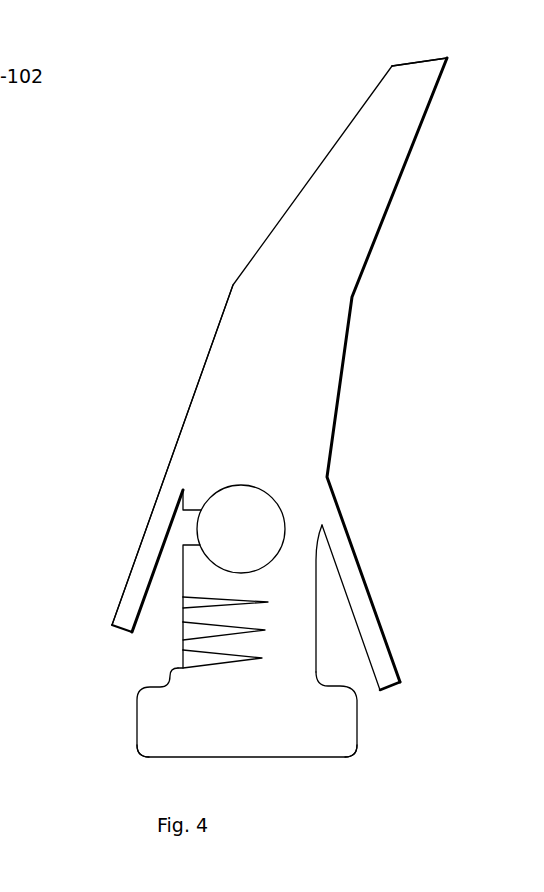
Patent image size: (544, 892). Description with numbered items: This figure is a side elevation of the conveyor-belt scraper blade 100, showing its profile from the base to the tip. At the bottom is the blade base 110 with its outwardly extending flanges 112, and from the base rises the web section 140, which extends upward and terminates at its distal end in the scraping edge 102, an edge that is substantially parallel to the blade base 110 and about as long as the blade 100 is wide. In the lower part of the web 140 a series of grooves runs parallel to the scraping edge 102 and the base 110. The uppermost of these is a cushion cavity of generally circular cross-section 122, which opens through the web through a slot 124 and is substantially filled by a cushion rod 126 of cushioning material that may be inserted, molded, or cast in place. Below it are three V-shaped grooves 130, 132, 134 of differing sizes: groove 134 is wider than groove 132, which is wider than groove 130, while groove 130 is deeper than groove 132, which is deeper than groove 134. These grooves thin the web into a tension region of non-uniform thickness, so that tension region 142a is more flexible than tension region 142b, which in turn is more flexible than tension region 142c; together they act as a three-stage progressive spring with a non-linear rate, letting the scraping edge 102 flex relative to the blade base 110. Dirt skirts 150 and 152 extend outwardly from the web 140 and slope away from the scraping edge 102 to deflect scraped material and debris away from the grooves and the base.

The blade 100 is at (275, 232).
The scraping edge 102 is at (447, 59).
The blade base 110 is at (232, 758).
The outwardly extending flanges 112 is at (137, 733).
The circular cross-section 122 is at (236, 484).
The slot 124 is at (187, 528).
The cushion rod 126 is at (262, 540).
The groove 130 is at (181, 601).
The groove 132 is at (182, 633).
The groove 134 is at (192, 660).
The web section 140 is at (213, 375).
The tension region 142a is at (277, 602).
The tension region 142b is at (277, 630).
The tension region 142c is at (277, 658).
The dirt skirt 150 is at (352, 542).
The dirt skirt 152 is at (125, 578).